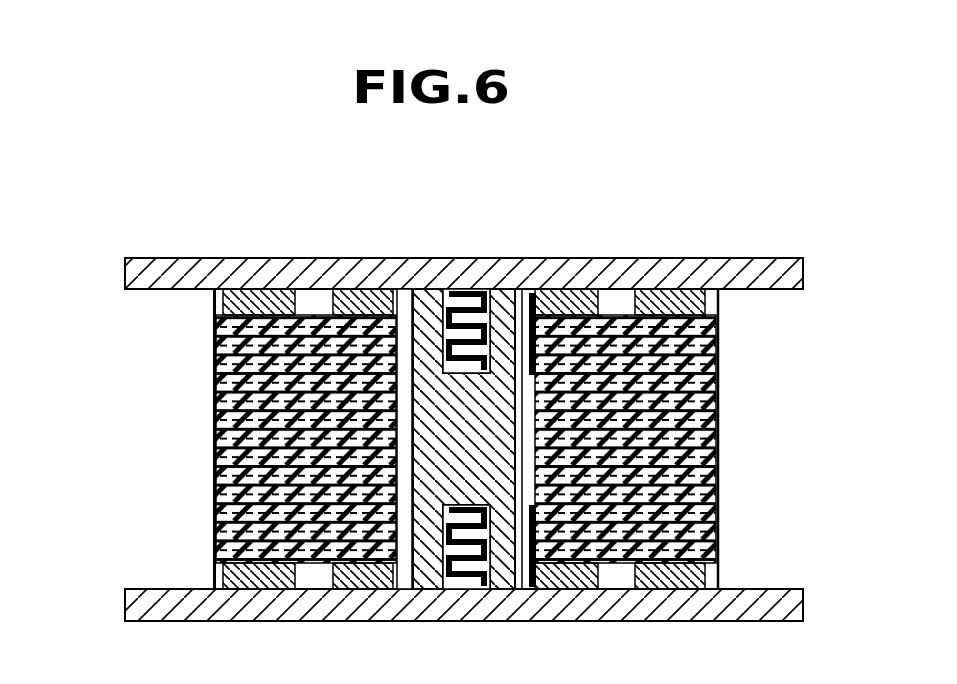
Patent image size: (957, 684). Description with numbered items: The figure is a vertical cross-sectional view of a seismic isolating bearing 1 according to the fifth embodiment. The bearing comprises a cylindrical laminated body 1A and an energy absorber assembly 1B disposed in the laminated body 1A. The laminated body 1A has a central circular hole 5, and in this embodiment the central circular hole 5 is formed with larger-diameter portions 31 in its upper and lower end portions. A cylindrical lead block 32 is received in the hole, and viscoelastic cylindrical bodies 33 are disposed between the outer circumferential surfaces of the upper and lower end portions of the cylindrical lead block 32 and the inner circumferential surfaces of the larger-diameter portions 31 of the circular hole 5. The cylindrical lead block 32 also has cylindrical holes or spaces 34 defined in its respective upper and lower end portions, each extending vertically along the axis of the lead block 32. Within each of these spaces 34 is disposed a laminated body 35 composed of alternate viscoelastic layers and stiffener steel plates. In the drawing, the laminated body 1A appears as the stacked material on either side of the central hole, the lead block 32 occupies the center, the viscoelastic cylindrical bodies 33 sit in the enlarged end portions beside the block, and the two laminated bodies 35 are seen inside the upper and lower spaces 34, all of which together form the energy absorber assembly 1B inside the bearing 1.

The seismic isolating bearing 1 is at (741, 258).
The cylindrical laminated body 1A is at (719, 410).
The energy absorber assembly 1B is at (526, 289).
The central circular hole 5 is at (513, 443).
The larger-diameter portions 31 is at (410, 296).
The cylindrical lead block 32 is at (213, 438).
The viscoelastic cylindrical bodies 33 is at (538, 292).
The cylindrical holes or spaces 34 is at (463, 296).
The laminated body 35 is at (483, 296).